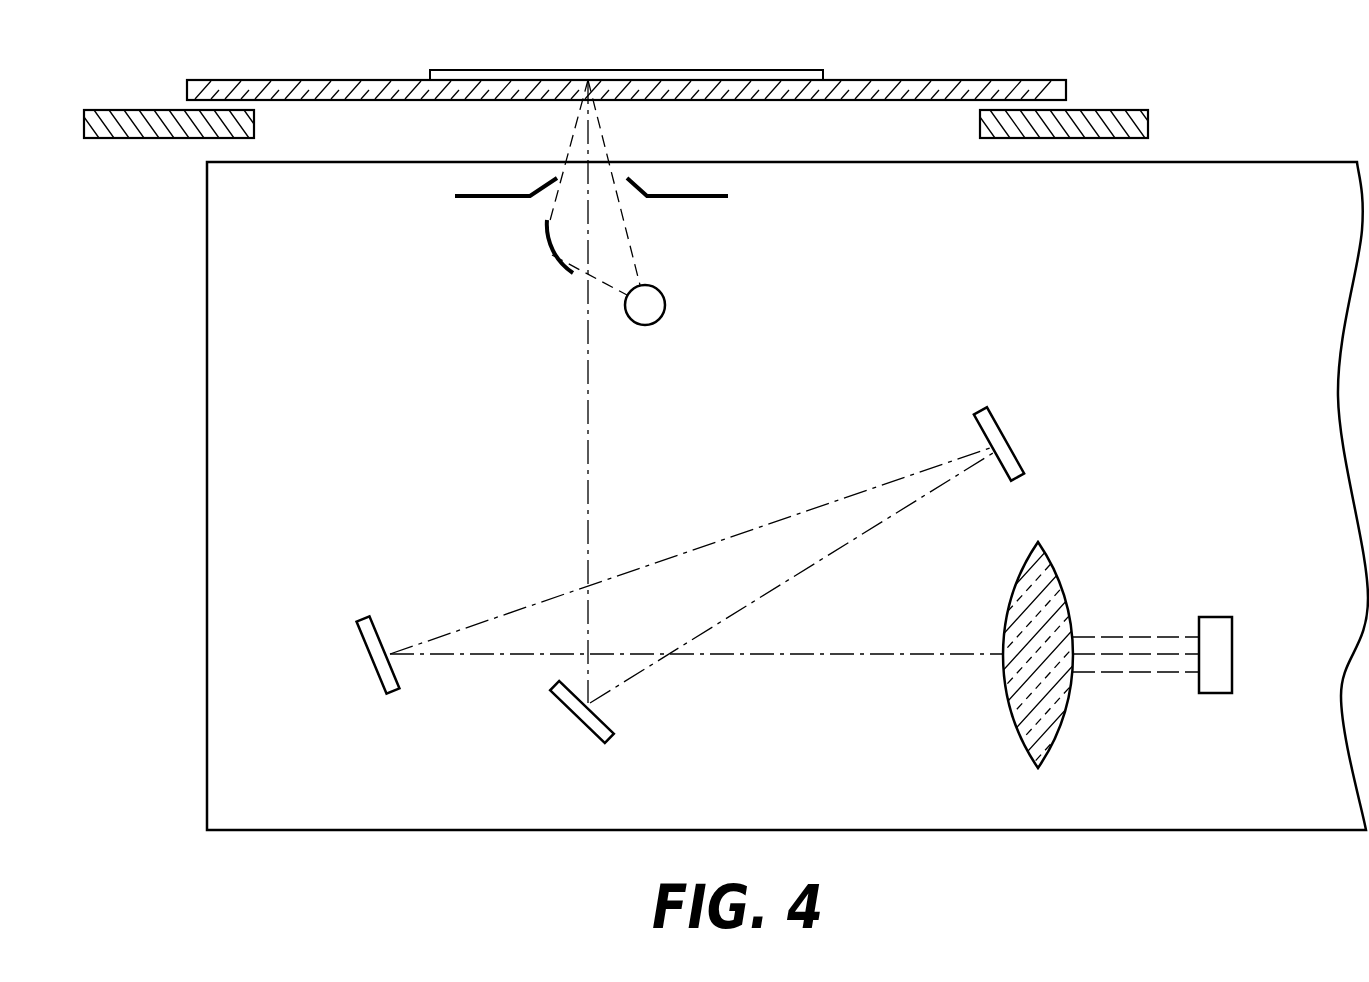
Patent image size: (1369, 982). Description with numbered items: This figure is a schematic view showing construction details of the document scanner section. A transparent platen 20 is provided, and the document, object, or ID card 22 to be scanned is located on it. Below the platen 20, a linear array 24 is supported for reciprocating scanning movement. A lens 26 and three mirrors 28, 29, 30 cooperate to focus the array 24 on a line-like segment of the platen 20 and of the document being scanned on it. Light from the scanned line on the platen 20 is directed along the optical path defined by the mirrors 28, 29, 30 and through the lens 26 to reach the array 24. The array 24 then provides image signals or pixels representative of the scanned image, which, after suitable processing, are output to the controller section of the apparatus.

The transparent platen 20 is at (705, 100).
The ID card 22 is at (768, 72).
The linear array 24 is at (1217, 617).
The lens 26 is at (1055, 730).
The mirror 28 is at (595, 737).
The mirror 29 is at (1003, 441).
The mirror 30 is at (378, 677).